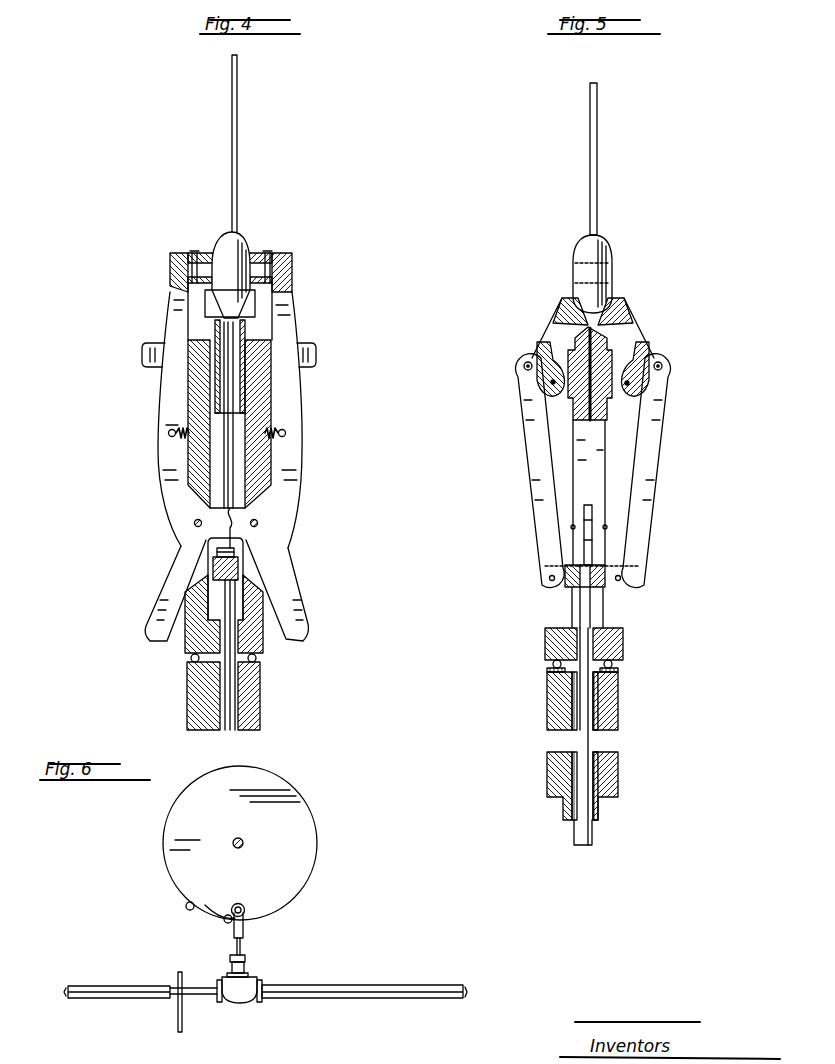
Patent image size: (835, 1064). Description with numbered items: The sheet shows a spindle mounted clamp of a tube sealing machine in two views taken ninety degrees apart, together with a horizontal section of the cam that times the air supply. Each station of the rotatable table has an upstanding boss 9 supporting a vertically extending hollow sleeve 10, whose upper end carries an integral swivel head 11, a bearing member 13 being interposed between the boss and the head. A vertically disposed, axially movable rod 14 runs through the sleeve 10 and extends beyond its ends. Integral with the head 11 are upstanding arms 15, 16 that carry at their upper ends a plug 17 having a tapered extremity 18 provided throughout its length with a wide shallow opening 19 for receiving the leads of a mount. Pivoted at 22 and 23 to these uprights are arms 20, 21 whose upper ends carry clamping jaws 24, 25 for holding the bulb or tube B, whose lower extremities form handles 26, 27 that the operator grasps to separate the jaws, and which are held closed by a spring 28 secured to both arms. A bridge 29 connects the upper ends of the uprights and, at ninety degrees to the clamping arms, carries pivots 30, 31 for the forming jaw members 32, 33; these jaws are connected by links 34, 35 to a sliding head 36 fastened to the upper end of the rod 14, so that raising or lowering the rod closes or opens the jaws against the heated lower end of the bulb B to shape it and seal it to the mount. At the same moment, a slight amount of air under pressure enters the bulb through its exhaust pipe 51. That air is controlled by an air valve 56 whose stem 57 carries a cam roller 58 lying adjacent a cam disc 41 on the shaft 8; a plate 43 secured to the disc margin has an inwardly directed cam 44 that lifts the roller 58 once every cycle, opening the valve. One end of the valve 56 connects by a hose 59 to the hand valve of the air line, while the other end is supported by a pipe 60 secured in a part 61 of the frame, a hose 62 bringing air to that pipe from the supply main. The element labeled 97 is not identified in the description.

In FIG. 4, the bulb or tube B is at (243, 240).
In FIG. 5, the bulb or tube B is at (600, 258).
In FIG. 6, the shaft 8 is at (245, 841).
In FIG. 5, the boss 9 is at (620, 708).
In FIG. 5, the hollow sleeve 10 is at (600, 813).
In FIG. 5, the head 11 is at (624, 646).
In FIG. 5, the bearing member 13 is at (613, 665).
In FIG. 5, the rod 14 is at (584, 834).
In FIG. 4, the upstanding arm 15 is at (262, 464).
In FIG. 4, the upstanding arm 16 is at (203, 456).
In FIG. 4, the plug 17 is at (246, 332).
In FIG. 5, the plug 17 is at (582, 402).
In FIG. 5, the tapered extremity 18 is at (600, 338).
In FIG. 4, the wide shallow opening 19 is at (229, 402).
In FIG. 4, the arm 20 is at (292, 513).
In FIG. 4, the arm 21 is at (173, 512).
In FIG. 4, the pivot 22 is at (259, 526).
In FIG. 4, the pivot 23 is at (195, 528).
In FIG. 4, the clamping jaw 24 is at (267, 256).
In FIG. 4, the clamping jaw 25 is at (194, 254).
In FIG. 4, the handle 26 is at (305, 641).
In FIG. 4, the handle 27 is at (163, 643).
In FIG. 4, the spring 28 is at (287, 433).
In FIG. 4, the bridge 29 is at (312, 358).
In FIG. 5, the pivot 30 is at (545, 386).
In FIG. 5, the pivot 31 is at (641, 386).
In FIG. 4, the forming jaw member 32 is at (258, 306).
In FIG. 5, the forming jaw member 32 is at (537, 352).
In FIG. 5, the forming jaw member 33 is at (645, 357).
In FIG. 5, the link 34 is at (540, 484).
In FIG. 5, the link 35 is at (642, 480).
In FIG. 5, the sliding head 36 is at (606, 586).
In FIG. 6, the cam disc 41 is at (301, 857).
In FIG. 6, the plate 43 is at (185, 898).
In FIG. 6, the cam 44 is at (242, 890).
In FIG. 5, the exhaust pipe 51 is at (598, 182).
In FIG. 6, the air valve 56 is at (243, 1000).
In FIG. 6, the stem 57 is at (242, 950).
In FIG. 6, the cam roller 58 is at (249, 906).
In FIG. 6, the hose 59 is at (392, 970).
In FIG. 6, the pipe 60 is at (206, 995).
In FIG. 6, the frame structure part 61 is at (175, 1023).
In FIG. 6, the hose 62 is at (113, 984).
In FIG. 5, the block 97 is at (593, 325).